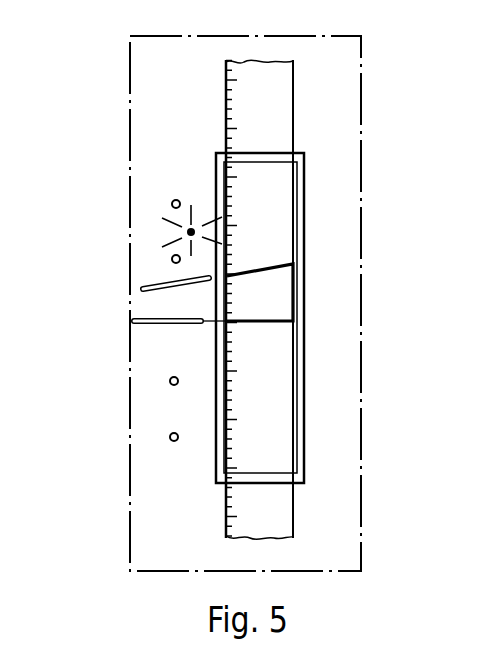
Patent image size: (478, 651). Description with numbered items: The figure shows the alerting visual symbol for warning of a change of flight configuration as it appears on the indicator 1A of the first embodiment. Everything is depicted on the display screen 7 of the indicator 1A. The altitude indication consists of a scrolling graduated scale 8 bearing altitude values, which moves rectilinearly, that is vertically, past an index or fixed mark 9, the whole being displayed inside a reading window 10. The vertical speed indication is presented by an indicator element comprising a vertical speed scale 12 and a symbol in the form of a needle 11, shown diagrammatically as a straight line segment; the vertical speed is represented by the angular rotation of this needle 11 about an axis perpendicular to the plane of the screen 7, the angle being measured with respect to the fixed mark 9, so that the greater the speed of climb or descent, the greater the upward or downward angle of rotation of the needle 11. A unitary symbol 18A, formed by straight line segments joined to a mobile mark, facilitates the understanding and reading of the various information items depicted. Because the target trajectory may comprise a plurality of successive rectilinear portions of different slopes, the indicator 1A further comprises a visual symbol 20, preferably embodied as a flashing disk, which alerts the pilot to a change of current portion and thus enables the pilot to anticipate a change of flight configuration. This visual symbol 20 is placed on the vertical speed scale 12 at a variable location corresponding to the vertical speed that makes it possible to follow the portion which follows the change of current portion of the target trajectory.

The indicator 1A is at (104, 108).
The display screen 7 is at (362, 120).
The scrolling graduated scale 8 is at (286, 510).
The reading window 10 is at (302, 408).
The symbol 18A is at (322, 288).
The vertical speed scale 12 is at (167, 182).
The visual symbol 20 is at (148, 229).
The needle 11 is at (153, 288).
The fixed mark 9 is at (153, 327).